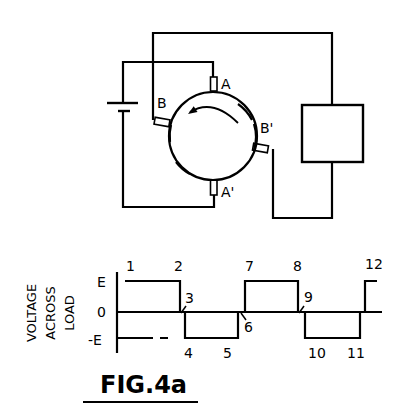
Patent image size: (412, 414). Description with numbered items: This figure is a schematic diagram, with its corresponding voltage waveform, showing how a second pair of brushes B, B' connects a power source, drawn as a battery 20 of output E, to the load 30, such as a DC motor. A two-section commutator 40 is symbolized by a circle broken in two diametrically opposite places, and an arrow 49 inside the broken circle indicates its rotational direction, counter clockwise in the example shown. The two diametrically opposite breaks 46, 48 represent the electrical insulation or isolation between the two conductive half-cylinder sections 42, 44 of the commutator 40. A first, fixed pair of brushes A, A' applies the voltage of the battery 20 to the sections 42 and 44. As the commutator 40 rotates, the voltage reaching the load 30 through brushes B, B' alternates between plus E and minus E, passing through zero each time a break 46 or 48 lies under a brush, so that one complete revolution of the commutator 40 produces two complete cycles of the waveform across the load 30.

The battery / voltage source E 20 is at (112, 114).
The load 30 is at (343, 110).
The commutator 40 is at (262, 106).
The conductive half-cylinder section 42 is at (244, 107).
The conductive half-cylinder section 44 is at (182, 169).
The break 46 is at (167, 134).
The break 48 is at (251, 139).
The arrow 49 is at (213, 122).